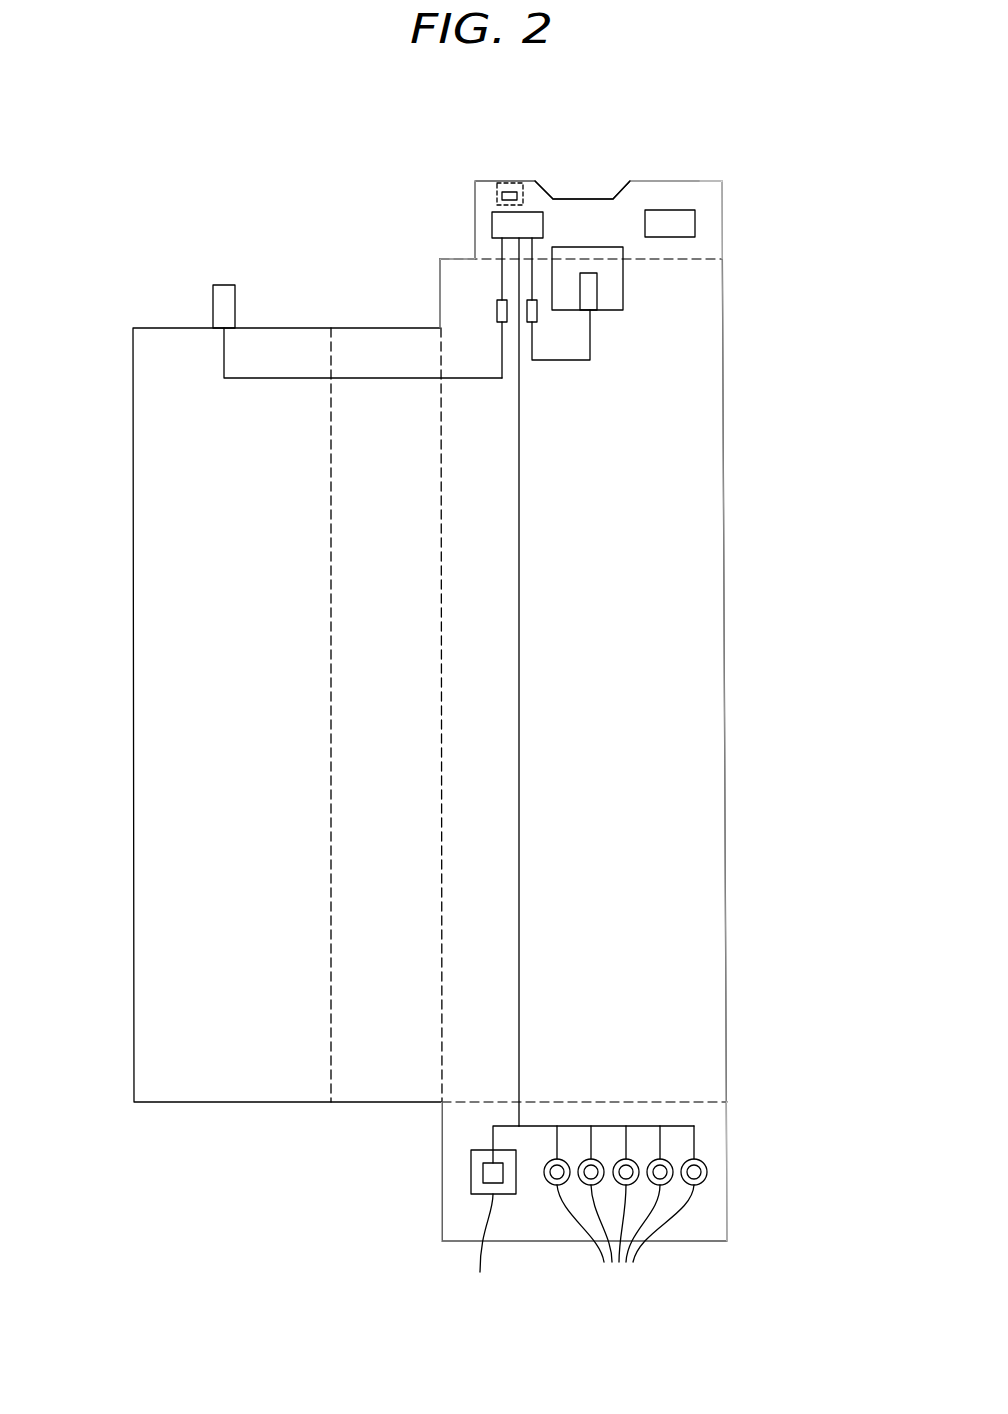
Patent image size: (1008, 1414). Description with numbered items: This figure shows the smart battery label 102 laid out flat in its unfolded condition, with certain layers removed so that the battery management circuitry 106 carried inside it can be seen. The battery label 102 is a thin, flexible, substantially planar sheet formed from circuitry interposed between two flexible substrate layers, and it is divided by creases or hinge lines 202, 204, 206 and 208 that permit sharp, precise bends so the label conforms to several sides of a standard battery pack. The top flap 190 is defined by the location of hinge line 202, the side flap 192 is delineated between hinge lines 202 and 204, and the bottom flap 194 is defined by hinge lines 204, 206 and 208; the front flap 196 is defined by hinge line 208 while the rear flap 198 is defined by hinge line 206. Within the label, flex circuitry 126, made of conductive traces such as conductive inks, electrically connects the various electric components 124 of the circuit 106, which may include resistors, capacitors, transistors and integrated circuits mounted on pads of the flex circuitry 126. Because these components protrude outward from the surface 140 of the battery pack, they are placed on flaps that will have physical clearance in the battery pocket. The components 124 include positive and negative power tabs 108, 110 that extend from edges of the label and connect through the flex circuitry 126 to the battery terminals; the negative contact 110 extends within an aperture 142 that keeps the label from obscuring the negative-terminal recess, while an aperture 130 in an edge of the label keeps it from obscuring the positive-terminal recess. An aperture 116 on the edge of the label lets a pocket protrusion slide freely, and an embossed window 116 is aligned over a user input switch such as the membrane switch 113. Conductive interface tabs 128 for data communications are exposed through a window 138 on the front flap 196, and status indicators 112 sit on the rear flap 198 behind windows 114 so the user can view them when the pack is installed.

The smart battery label 102 is at (133, 750).
The battery management circuitry 106 is at (772, 115).
The positive power tab 108 is at (230, 297).
The negative power tab 110 is at (690, 224).
The status indicators 112 is at (625, 1242).
The membrane switch 113 is at (471, 1173).
The windows 114 is at (707, 1170).
The aperture 116 is at (448, 250).
The electric components 124 is at (412, 178).
The flex circuitry 126 is at (519, 478).
The conductive interface tabs 128 is at (508, 190).
The aperture 130 is at (578, 188).
The window 138 is at (486, 189).
The surface 140 is at (716, 192).
The aperture 142 is at (605, 310).
The top flap 190 is at (170, 508).
The side flap 192 is at (377, 395).
The bottom flap 194 is at (705, 620).
The front flap 196 is at (653, 192).
The rear flap 198 is at (710, 1222).
The hinge line 202 is at (330, 558).
The hinge line 204 is at (442, 566).
The hinge line 206 is at (615, 1100).
The hinge line 208 is at (705, 260).